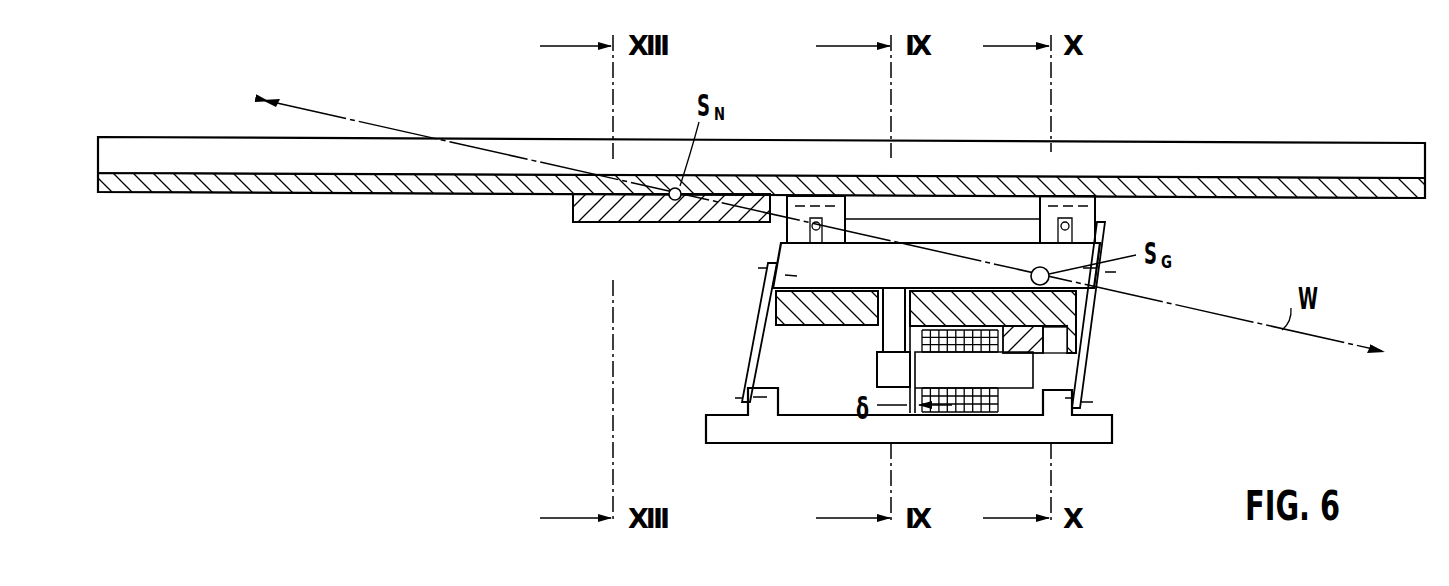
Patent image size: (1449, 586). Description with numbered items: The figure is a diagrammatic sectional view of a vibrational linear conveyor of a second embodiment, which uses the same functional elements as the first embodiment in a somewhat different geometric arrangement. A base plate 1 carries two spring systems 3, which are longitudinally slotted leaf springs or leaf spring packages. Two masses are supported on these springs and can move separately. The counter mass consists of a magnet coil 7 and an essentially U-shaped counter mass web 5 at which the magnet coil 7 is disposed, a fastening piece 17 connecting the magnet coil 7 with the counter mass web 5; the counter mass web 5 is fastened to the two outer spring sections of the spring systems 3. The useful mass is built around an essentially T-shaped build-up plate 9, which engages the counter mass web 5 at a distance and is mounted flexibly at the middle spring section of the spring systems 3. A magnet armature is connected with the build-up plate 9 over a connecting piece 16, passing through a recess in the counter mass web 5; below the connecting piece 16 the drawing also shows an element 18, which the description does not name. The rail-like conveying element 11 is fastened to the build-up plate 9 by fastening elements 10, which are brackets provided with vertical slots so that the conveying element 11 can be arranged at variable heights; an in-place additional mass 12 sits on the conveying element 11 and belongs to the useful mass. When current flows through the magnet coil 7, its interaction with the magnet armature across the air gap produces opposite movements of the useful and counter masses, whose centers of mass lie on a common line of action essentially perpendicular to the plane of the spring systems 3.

The base plate 1 is at (1086, 443).
The spring systems 3 is at (757, 320).
The counter mass web 5 is at (835, 326).
The magnet coil 7 is at (975, 380).
The build-up plate 9 is at (791, 262).
The fastening elements 10 is at (833, 210).
The conveying element 11 is at (1262, 150).
The additional mass 12 is at (597, 224).
The connecting piece 16 is at (888, 334).
The fastening piece 17 is at (1050, 357).
The stop 18 is at (879, 373).